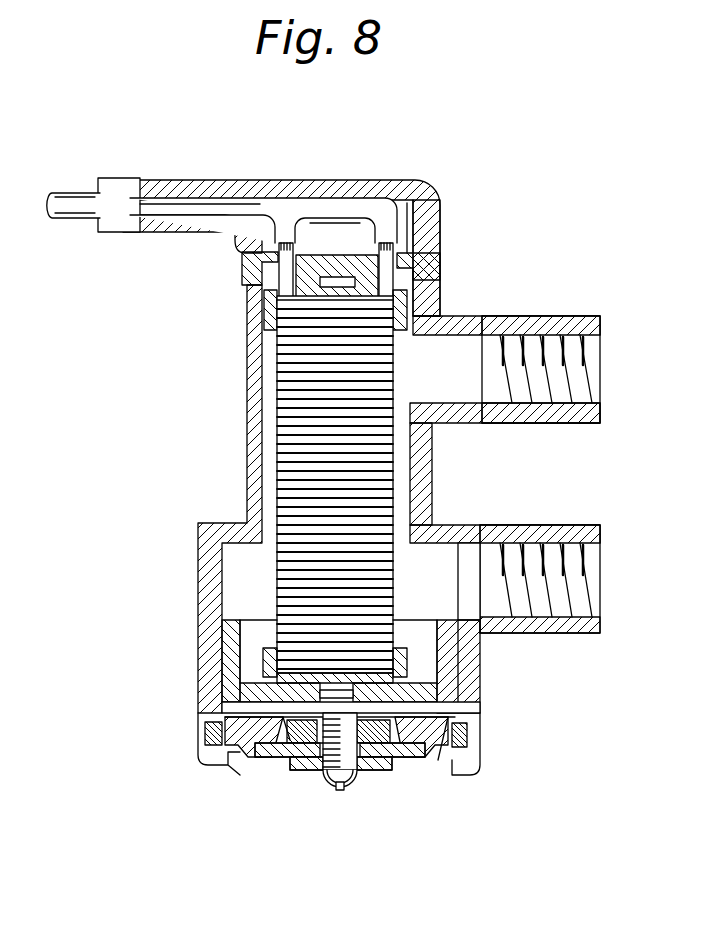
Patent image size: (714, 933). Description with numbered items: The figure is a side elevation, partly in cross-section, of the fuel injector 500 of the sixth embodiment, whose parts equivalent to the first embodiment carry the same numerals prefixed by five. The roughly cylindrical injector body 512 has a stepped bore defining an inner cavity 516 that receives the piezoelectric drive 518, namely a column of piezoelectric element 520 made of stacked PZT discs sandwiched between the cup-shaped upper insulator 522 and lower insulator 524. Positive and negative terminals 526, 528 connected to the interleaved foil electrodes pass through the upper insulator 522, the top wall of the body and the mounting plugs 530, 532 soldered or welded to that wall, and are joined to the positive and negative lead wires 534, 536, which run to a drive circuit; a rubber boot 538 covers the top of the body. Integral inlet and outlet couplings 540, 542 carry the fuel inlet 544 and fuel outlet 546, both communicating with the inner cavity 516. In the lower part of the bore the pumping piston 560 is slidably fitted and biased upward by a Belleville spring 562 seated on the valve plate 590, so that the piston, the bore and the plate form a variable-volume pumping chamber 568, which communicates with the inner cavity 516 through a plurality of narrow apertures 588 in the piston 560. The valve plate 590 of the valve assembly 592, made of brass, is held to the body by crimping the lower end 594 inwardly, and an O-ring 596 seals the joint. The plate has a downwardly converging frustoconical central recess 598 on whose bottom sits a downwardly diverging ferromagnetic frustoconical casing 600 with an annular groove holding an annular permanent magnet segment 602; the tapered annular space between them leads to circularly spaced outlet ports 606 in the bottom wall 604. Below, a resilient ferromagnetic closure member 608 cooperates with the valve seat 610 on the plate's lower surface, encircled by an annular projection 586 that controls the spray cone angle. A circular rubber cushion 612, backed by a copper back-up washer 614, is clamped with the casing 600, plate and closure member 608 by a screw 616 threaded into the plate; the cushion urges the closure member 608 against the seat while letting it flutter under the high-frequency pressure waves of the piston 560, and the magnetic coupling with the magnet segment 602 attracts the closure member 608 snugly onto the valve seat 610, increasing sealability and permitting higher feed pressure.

The fuel injector 500 is at (157, 482).
The injector body 512 is at (250, 428).
The inner cavity 516 is at (410, 458).
The piezoelectric drive 518 is at (413, 357).
The piezoelectric element column 520 is at (285, 378).
The upper insulator 522 is at (436, 289).
The lower insulator 524 is at (268, 657).
The positive terminal 526 is at (262, 290).
The negative terminal 528 is at (412, 233).
The mounting plug 530 is at (245, 260).
The mounting plug 532 is at (408, 264).
The positive lead wire 534 is at (265, 200).
The negative lead wire 536 is at (385, 200).
The rubber boot 538 is at (318, 183).
The inlet coupling 540 is at (585, 530).
The outlet coupling 542 is at (600, 317).
The fuel inlet 544 is at (510, 543).
The fuel outlet 546 is at (544, 333).
The pumping piston 560 is at (452, 658).
The Belleville spring 562 is at (462, 714).
The pumping chamber 568 is at (435, 705).
The annular projection 586 is at (455, 780).
The narrow apertures 588 is at (248, 690).
The valve plate 590 is at (470, 768).
The valve assembly 592 is at (273, 780).
The lower end of injector body 594 is at (210, 763).
The O-ring 596 is at (478, 737).
The frustoconical central recess 598 is at (268, 725).
The frustoconical casing 600 is at (258, 773).
The permanent magnet segment 602 is at (298, 773).
The bottom wall of valve plate 604 is at (397, 773).
The outlet ports 606 is at (425, 773).
The closure member 608 is at (405, 790).
The valve seat 610 is at (240, 773).
The rubber cushion 612 is at (388, 773).
The back-up washer 614 is at (370, 773).
The screw 616 is at (322, 782).